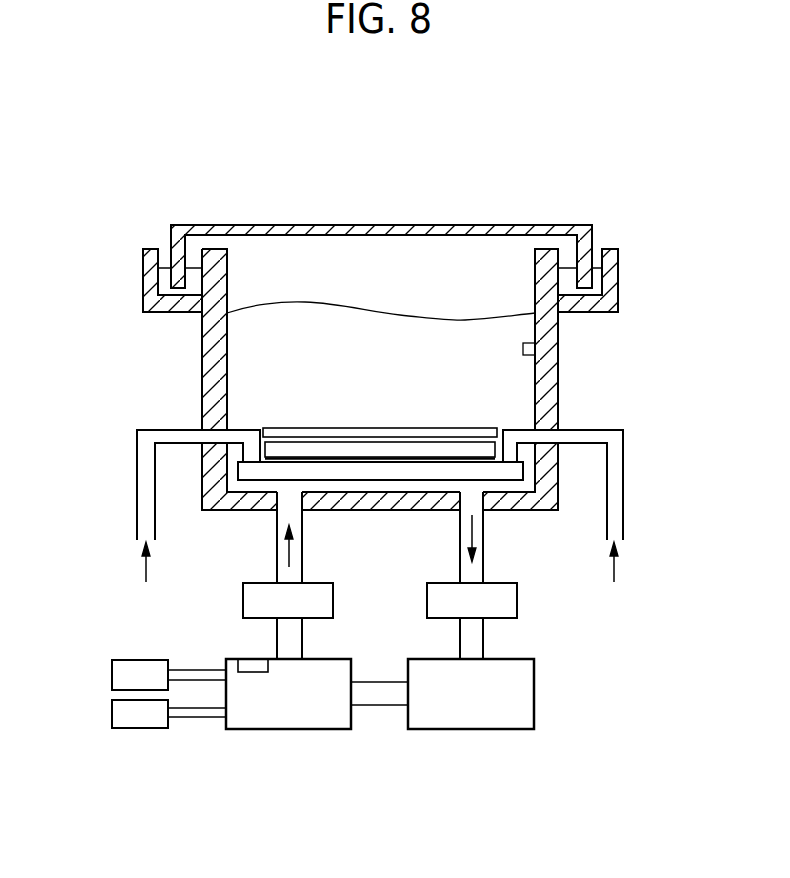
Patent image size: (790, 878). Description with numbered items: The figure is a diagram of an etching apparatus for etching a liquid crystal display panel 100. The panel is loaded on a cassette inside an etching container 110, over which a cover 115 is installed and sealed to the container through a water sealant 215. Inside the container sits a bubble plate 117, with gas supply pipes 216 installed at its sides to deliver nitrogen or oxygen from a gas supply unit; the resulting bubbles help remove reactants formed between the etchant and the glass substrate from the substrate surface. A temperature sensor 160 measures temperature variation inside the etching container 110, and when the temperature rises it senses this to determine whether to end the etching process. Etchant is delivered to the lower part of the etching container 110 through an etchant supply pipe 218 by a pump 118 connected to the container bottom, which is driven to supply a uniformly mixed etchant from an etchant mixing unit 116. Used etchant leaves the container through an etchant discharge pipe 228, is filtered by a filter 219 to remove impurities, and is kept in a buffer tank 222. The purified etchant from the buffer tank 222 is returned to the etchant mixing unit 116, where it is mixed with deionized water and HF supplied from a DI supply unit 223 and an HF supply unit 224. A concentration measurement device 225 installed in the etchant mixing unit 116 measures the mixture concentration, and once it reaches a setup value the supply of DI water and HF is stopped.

The liquid crystal display panel 100 is at (404, 428).
The etching container 110 is at (213, 368).
The cover 115 is at (587, 235).
The etchant mixing unit 116 is at (313, 723).
The bubble plate 117 is at (388, 480).
The pump 118 is at (334, 600).
The temperature sensor 160 is at (535, 350).
The water sealant 215 is at (598, 288).
The gas supply pipes 216 is at (624, 502).
The etchant supply pipe 218 is at (277, 541).
The filter 219 is at (518, 600).
The buffer tank 222 is at (534, 692).
The DI supply unit 223 is at (112, 676).
The HF supply unit 224 is at (112, 715).
The concentration measurement device 225 is at (247, 662).
The etchant discharge pipe 228 is at (484, 541).